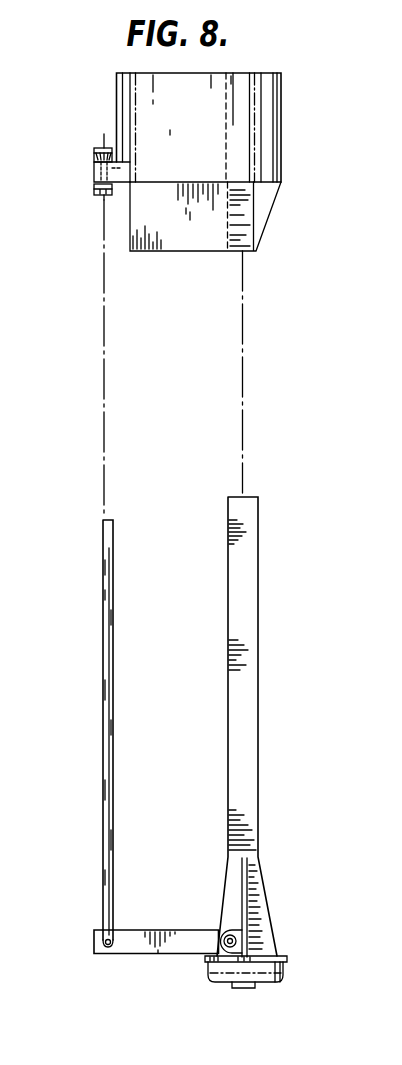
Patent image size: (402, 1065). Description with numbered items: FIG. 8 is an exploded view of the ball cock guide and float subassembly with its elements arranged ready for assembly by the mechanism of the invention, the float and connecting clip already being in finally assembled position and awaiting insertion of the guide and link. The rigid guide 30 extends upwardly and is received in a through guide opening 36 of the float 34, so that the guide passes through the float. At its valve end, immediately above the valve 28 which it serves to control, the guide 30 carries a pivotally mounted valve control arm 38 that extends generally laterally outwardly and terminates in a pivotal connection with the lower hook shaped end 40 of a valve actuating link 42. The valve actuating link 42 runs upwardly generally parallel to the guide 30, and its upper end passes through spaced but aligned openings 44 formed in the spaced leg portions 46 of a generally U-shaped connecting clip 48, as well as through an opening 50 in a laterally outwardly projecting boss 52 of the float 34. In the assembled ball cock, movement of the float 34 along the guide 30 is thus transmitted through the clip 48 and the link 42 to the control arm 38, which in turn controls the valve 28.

The valve 28 is at (283, 970).
The rigid guide 30 is at (259, 712).
The float 34 is at (272, 93).
The through guide opening 36 is at (263, 132).
The valve control arm 38 is at (178, 947).
The lower hook shaped end 40 is at (113, 930).
The valve actuating link 42 is at (111, 670).
The openings 44 is at (95, 150).
The leg portions 46 is at (103, 134).
The connecting clip 48 is at (93, 158).
The opening 50 is at (110, 170).
The boss 52 is at (94, 172).